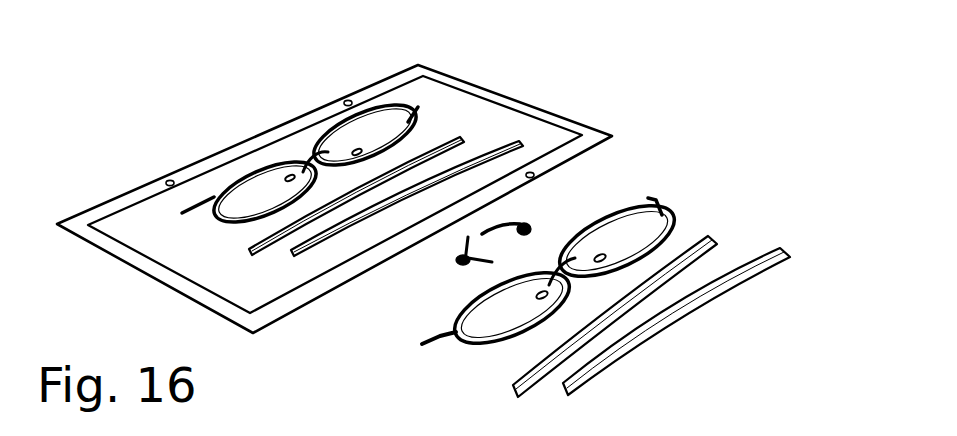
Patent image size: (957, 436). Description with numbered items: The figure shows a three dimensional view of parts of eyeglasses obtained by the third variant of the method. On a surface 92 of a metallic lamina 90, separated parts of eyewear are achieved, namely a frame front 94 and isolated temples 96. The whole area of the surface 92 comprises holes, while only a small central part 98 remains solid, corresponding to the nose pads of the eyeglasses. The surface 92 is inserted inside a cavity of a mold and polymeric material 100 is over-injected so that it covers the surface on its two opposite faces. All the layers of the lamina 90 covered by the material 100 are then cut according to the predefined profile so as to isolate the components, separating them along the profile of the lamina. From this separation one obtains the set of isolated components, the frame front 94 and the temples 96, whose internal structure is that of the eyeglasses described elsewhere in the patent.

The metallic lamina 90 is at (612, 136).
The surface 92 is at (140, 225).
The frame front 94 is at (667, 225).
The isolated temples 96 is at (715, 238).
The central part 98 is at (533, 223).
The polymeric material 100 is at (487, 123).